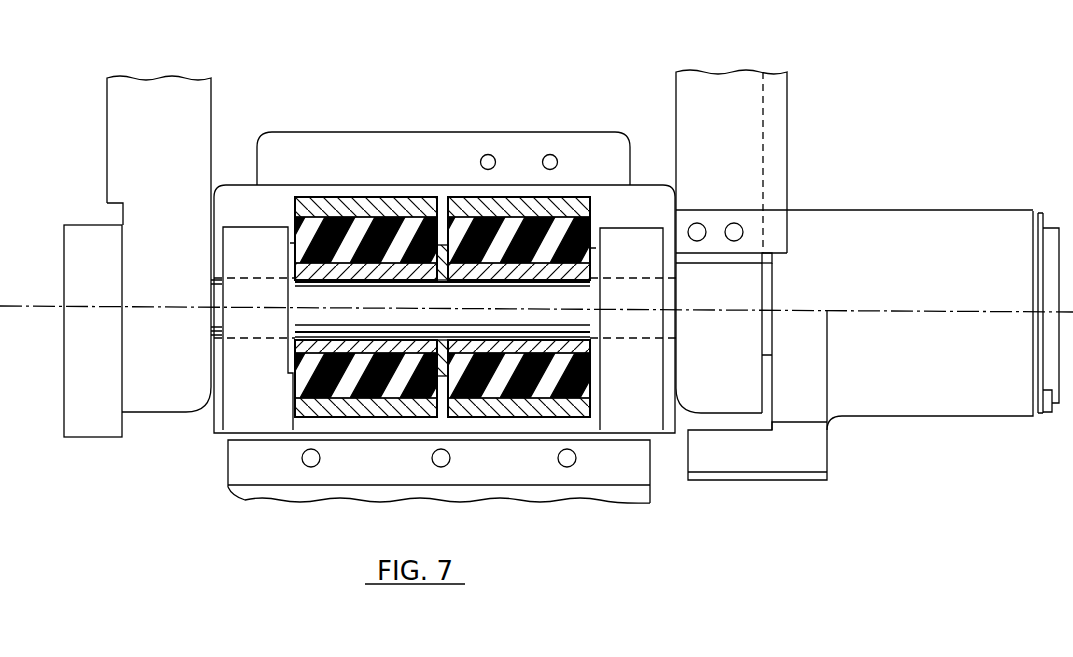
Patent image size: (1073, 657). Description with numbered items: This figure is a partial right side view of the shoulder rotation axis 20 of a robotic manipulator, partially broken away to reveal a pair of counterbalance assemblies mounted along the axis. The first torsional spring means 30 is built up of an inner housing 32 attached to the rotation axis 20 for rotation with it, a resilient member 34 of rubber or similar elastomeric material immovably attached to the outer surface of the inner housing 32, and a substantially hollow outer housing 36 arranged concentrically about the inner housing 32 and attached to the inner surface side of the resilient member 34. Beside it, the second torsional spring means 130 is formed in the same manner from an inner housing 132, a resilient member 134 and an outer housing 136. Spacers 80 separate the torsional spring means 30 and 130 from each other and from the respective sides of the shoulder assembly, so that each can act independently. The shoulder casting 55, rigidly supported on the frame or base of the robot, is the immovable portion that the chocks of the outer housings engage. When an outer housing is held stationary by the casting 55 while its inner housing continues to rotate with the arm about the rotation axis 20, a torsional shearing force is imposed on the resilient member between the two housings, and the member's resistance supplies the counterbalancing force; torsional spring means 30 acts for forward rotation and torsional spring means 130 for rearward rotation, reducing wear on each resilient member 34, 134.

The rotation axis 20 is at (308, 322).
The torsional spring means 30 is at (357, 232).
The inner housing 32 is at (365, 218).
The resilient member 34 is at (310, 222).
The outer housing 36 is at (328, 200).
The shoulder casting 55 is at (408, 470).
The spacers 80 is at (290, 243).
The torsional spring means 130 is at (526, 228).
The inner housing 132 is at (568, 257).
The resilient member 134 is at (520, 218).
The outer housing 136 is at (497, 207).